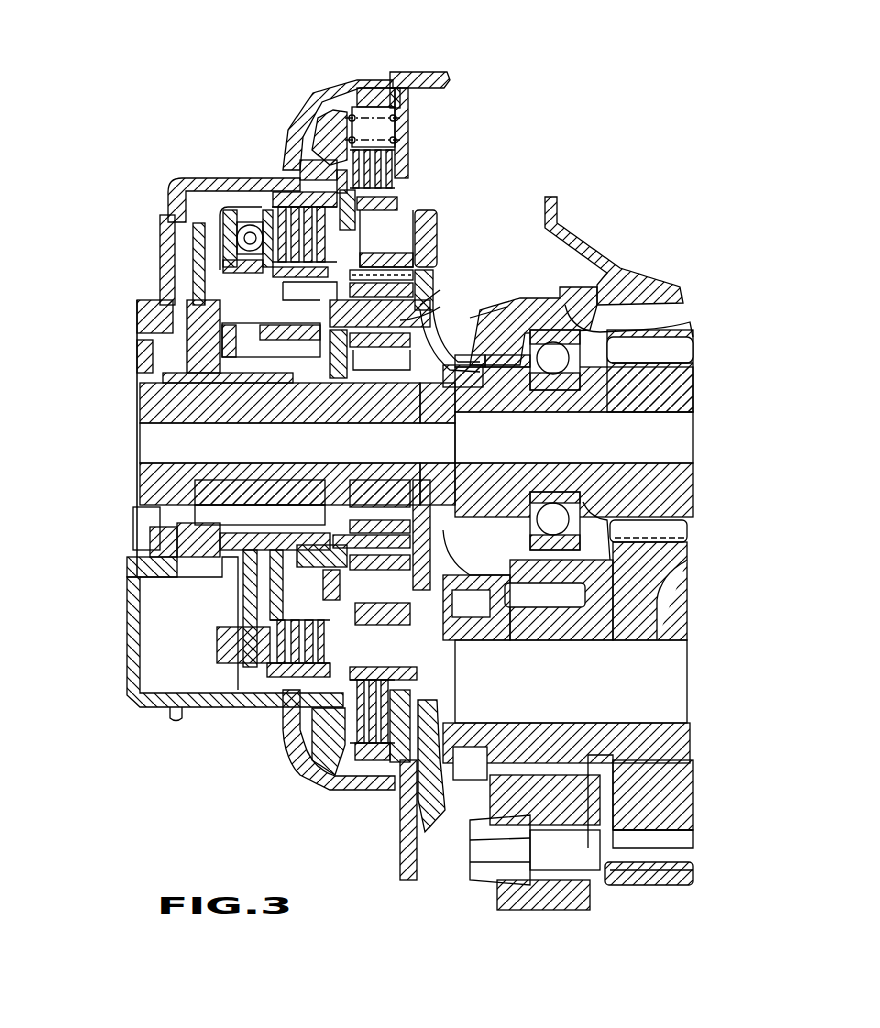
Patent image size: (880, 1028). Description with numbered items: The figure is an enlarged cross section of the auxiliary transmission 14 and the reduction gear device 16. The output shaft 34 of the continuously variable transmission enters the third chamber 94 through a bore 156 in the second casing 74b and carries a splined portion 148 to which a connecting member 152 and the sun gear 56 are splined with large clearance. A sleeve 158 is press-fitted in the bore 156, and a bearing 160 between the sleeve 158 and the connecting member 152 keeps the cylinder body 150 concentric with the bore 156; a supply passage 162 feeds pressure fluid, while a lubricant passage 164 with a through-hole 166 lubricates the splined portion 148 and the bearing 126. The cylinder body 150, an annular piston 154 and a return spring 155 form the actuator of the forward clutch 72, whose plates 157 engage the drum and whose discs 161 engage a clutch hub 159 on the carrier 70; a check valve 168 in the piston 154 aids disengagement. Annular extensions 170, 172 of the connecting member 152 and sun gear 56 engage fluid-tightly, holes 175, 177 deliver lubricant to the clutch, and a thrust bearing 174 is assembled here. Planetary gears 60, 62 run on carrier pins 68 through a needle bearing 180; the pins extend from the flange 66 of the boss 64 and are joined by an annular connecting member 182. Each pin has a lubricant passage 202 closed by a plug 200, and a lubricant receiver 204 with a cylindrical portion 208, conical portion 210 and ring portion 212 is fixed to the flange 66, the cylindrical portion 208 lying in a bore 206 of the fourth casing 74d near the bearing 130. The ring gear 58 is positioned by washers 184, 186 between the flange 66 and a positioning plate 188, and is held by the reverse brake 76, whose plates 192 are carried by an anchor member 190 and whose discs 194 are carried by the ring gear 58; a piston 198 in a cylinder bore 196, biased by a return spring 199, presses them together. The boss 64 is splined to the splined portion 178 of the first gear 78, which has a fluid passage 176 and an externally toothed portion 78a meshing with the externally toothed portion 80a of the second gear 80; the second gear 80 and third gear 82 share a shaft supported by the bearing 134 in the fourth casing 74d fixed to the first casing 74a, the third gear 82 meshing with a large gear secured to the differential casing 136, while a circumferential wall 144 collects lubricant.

The auxiliary transmission 14 is at (218, 58).
The reduction gear device 16 is at (725, 248).
The output shaft 34 is at (123, 463).
The sun gear 56 is at (397, 390).
The ring gear 58 is at (377, 256).
The planetary gear 60 is at (433, 287).
The planetary gear 62 is at (395, 460).
The boss 64 is at (473, 380).
The flange 66 is at (420, 227).
The carrier pins 68 is at (230, 285).
The carrier 70 is at (450, 242).
The forward clutch 72 is at (263, 680).
The first casing 74a is at (633, 273).
The second casing 74b is at (187, 178).
The fourth casing 74d is at (593, 323).
The reverse brake 76 is at (357, 770).
The first gear 78 is at (702, 343).
The externally toothed portion 78a is at (680, 350).
The second gear 80 is at (695, 830).
The externally toothed portion 80a is at (673, 838).
The third gear 82 is at (570, 600).
The third chamber 94 is at (220, 197).
The bearing 126 is at (137, 513).
The bearing 130 is at (560, 378).
The bearing 134 is at (473, 760).
The differential casing 136 is at (582, 890).
The circumferential wall 144 is at (647, 880).
The splined portion 148 is at (227, 470).
The cylinder body 150 is at (237, 590).
The connecting member 152 is at (265, 385).
The annular piston 154 is at (253, 617).
The return spring 155 is at (295, 300).
The bore 156 is at (218, 510).
The plates 157 is at (280, 213).
The sleeve 158 is at (175, 383).
The clutch hub 159 is at (273, 287).
The bearing 160 is at (240, 400).
The discs 161 is at (237, 270).
The supply passage 162 is at (185, 362).
The lubricant passage 164 is at (147, 530).
The through-hole 166 is at (197, 493).
The check valve 168 is at (248, 238).
The annular extension 170 is at (327, 393).
The annular extension 172 is at (320, 377).
The thrust bearing 174 is at (443, 420).
The hole 175 is at (300, 495).
The fluid passage 176 is at (147, 443).
The hole 177 is at (340, 480).
The splined portion 178 is at (500, 470).
The needle bearing 180 is at (440, 290).
The annular connecting member 182 is at (350, 620).
The washer 184 is at (405, 215).
The washer 186 is at (418, 240).
The positioning plate 188 is at (343, 680).
The annular anchor member 190 is at (378, 98).
The plates 192 is at (380, 762).
The discs 194 is at (400, 670).
The annular cylinder bore 196 is at (306, 105).
The piston 198 is at (320, 133).
The return spring 199 is at (372, 98).
The plug 200 is at (440, 307).
The lubricant passage 202 is at (507, 307).
The lubricant receiver 204 is at (460, 343).
The bore 206 is at (487, 363).
The cylindrical portion 208 is at (545, 593).
The conical portion 210 is at (497, 570).
The ring portion 212 is at (445, 615).